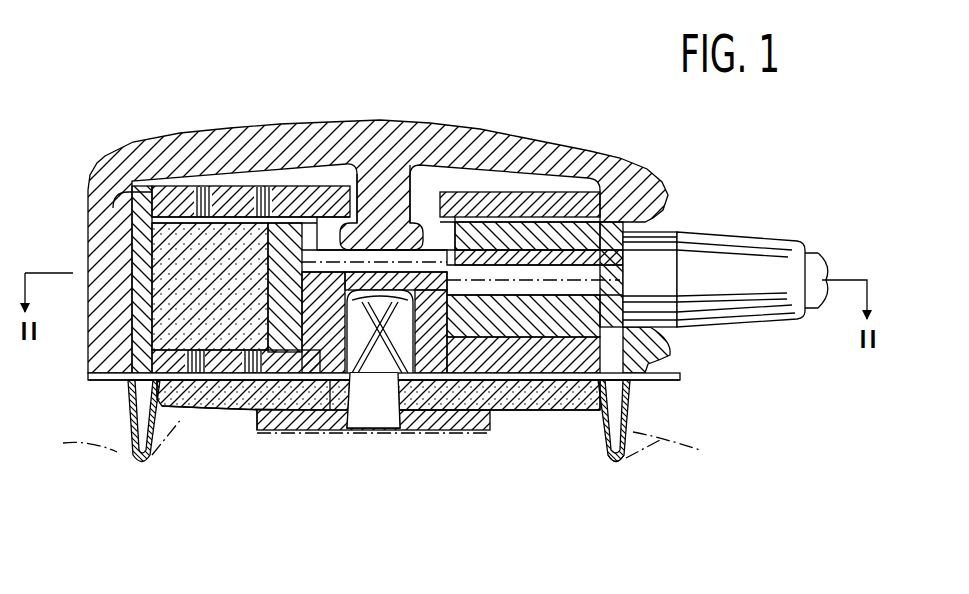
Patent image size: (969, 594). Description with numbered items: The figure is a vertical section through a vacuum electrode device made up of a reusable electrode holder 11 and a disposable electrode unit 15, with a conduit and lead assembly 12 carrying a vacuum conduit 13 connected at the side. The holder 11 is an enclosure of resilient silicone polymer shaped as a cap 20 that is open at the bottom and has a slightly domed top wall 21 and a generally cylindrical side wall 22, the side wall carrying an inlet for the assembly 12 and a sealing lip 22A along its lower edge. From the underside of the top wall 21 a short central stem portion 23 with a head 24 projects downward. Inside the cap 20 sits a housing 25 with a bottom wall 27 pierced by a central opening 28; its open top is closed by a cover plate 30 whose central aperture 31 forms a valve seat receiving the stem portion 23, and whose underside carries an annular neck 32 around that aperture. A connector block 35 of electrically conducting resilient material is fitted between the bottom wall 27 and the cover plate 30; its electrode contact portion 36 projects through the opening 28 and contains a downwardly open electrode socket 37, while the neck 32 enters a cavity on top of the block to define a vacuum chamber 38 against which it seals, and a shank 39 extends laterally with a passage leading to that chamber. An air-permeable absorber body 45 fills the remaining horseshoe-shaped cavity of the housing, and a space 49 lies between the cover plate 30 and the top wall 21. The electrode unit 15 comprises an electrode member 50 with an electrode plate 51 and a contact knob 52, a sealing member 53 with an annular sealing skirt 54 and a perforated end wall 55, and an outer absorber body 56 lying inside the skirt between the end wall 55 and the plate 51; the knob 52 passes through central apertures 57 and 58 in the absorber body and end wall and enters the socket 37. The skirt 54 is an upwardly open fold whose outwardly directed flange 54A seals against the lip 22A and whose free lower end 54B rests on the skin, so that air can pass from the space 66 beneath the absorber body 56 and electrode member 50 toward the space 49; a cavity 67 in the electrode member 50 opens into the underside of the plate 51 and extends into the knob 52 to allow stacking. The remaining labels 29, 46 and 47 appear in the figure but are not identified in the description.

The electrode holder 11 is at (130, 140).
The conduit and lead assembly 12 is at (818, 242).
The vacuum conduit 13 is at (818, 311).
The electrode unit 15 is at (228, 413).
The cap 20 is at (110, 158).
The top wall 21 is at (202, 195).
The side wall 22 is at (95, 220).
The sealing lip 22A is at (650, 362).
The stem portion 23 is at (362, 185).
The head 24 is at (385, 235).
The housing 25 is at (128, 341).
The bottom wall 27 is at (117, 378).
The central opening 28 is at (478, 418).
The annular groove 29 is at (112, 192).
The cover plate 30 is at (190, 186).
The central aperture 31 is at (423, 198).
The annular neck 32 is at (300, 218).
The connector block 35 is at (290, 437).
The electrode contact portion 36 is at (445, 414).
The electrode socket 37 is at (350, 434).
The vacuum chamber 38 is at (487, 257).
The shank 39 is at (485, 413).
The absorber body 45 is at (88, 263).
The ribs 46 is at (260, 188).
The elastic member corner 47 is at (188, 405).
The space 49 is at (507, 172).
The electrode member 50 is at (365, 442).
The electrode plate 51 is at (303, 431).
The contact knob 52 is at (390, 398).
The sealing member 53 is at (634, 416).
The sealing skirt 54 is at (640, 450).
The outwardly directed flange 54A is at (660, 378).
The free lower end 54B is at (610, 466).
The end wall 55 is at (540, 411).
The outer absorber body 56 is at (242, 414).
The central aperture 57 is at (315, 434).
The central aperture 58 is at (433, 434).
The space 66 is at (128, 426).
The cavity 67 is at (388, 421).